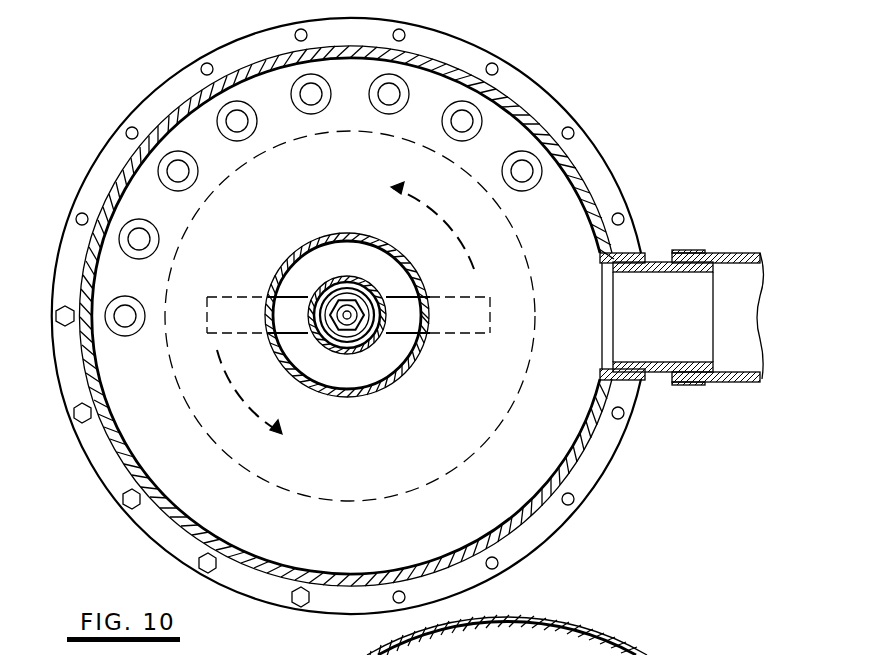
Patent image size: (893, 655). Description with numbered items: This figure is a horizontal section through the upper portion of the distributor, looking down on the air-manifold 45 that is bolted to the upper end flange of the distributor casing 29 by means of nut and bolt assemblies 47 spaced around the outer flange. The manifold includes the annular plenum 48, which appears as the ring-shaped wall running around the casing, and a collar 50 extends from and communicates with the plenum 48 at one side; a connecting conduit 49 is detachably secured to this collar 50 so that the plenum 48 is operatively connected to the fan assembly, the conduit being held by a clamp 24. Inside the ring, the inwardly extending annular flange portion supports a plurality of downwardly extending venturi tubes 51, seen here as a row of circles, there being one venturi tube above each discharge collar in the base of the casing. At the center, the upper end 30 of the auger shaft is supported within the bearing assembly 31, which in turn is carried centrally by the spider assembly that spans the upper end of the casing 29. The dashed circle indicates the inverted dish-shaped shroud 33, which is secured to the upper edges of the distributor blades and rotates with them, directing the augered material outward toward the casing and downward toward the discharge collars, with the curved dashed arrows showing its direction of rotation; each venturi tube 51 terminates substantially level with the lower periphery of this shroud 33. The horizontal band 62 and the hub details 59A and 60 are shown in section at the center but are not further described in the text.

The annular plenum 48 is at (120, 173).
The nut and bolt assemblies 47 is at (132, 497).
The venturi tubes 51 is at (227, 125).
The dish-shaped shroud 33 is at (484, 407).
The arm 62 is at (226, 310).
The bearing assembly 31 is at (297, 283).
The bearing 59A is at (368, 277).
The nut 60 is at (340, 352).
The upper end of the auger shaft 30 is at (317, 315).
The collars 50 is at (625, 287).
The connecting conduits 49 is at (732, 285).
The clamps 24 is at (690, 252).
The air-manifold 45 is at (686, 410).
The casing 29 is at (650, 652).